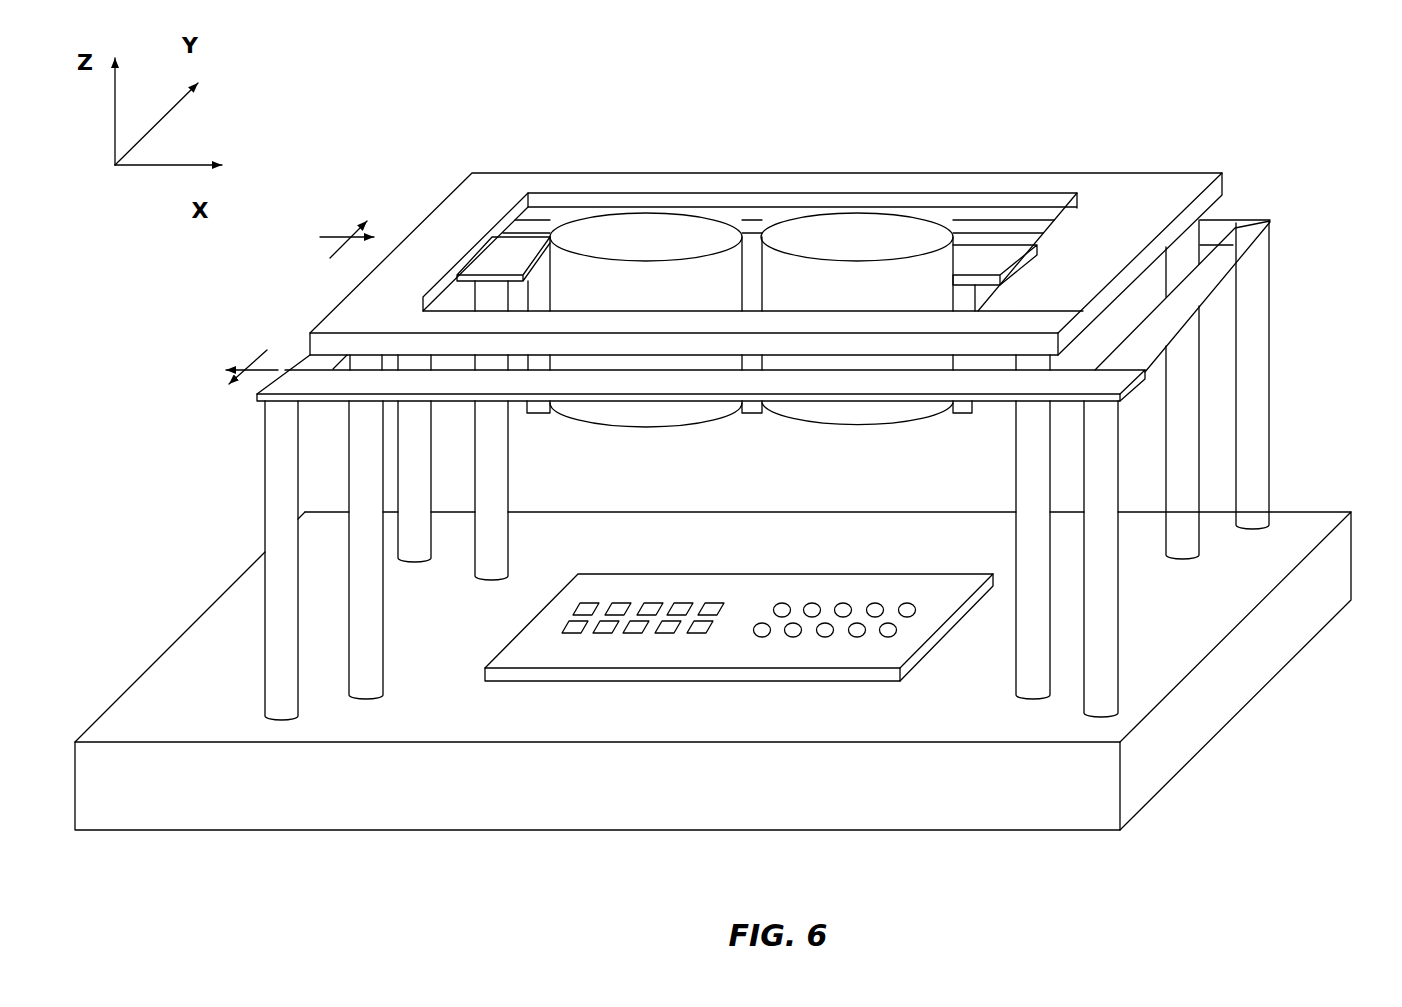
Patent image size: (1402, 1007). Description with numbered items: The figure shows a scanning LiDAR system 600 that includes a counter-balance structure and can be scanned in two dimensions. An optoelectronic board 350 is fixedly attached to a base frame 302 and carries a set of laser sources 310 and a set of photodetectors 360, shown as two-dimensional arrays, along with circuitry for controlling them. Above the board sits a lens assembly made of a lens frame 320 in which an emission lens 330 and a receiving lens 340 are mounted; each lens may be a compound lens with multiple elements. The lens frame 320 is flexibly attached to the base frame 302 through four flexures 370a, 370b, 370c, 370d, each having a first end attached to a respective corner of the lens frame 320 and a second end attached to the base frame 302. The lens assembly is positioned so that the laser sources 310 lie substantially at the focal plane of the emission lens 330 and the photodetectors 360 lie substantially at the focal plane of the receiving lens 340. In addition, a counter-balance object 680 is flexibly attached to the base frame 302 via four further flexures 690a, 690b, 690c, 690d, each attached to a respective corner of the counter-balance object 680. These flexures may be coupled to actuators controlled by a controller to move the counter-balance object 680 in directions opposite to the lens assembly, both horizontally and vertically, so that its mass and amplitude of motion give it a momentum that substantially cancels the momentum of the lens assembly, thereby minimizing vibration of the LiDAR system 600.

The scanning LiDAR system 600 is at (474, 92).
The base frame 302 is at (1211, 715).
The laser sources 310 is at (760, 637).
The lens frame 320 is at (1141, 205).
The emission lens 330 is at (881, 237).
The receiving lens 340 is at (669, 237).
The optoelectronic board 350 is at (943, 627).
The photodetectors 360 is at (570, 633).
The flexure 370a is at (1035, 488).
The flexure 370b is at (1183, 412).
The flexure 370c is at (500, 468).
The flexure 370d is at (360, 485).
The counter-balance object 680 is at (1234, 248).
The flexure 690a is at (1093, 611).
The flexure 690b is at (1248, 335).
The flexure 690c is at (418, 438).
The flexure 690d is at (273, 525).